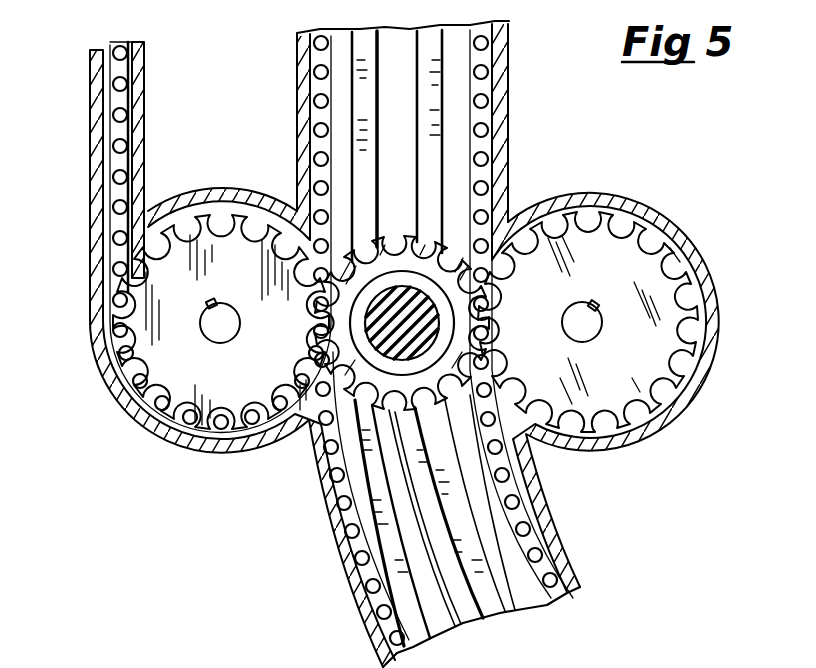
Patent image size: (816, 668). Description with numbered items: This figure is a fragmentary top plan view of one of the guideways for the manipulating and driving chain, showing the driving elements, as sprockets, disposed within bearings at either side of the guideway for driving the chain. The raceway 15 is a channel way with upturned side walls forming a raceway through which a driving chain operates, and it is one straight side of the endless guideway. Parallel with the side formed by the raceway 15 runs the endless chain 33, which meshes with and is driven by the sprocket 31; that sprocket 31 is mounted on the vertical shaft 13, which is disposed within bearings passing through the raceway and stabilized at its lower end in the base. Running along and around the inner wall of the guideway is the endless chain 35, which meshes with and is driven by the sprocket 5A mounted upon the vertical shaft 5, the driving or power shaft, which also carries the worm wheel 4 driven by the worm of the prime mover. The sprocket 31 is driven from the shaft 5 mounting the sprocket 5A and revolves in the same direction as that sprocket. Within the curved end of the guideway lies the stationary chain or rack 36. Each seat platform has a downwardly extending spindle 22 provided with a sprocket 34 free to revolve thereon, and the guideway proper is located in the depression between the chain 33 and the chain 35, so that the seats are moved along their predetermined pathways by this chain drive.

The worm wheel 4 is at (560, 97).
The vertical shaft 5 is at (596, 337).
The sprocket 5A is at (667, 299).
The vertical shaft 13 is at (217, 343).
The raceway 15 is at (430, 172).
The spindle 22 is at (308, 430).
The sprocket 31 is at (197, 422).
The chain 33 is at (118, 283).
The sprocket 34 is at (362, 420).
The endless chain 35 is at (505, 213).
The stationary chain 36 is at (358, 573).